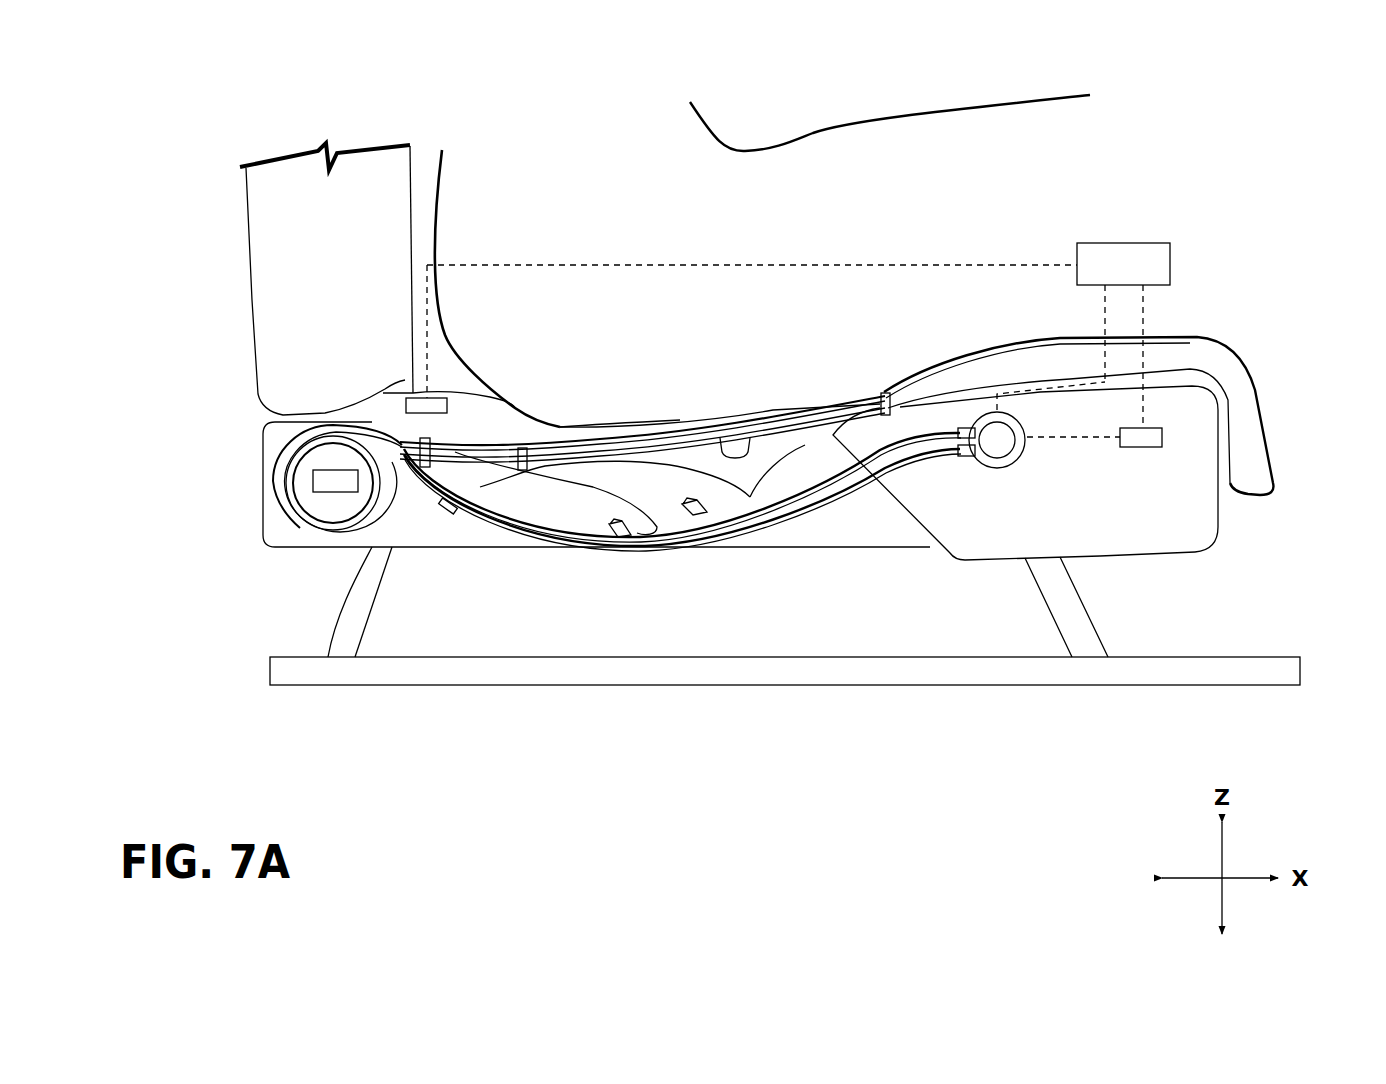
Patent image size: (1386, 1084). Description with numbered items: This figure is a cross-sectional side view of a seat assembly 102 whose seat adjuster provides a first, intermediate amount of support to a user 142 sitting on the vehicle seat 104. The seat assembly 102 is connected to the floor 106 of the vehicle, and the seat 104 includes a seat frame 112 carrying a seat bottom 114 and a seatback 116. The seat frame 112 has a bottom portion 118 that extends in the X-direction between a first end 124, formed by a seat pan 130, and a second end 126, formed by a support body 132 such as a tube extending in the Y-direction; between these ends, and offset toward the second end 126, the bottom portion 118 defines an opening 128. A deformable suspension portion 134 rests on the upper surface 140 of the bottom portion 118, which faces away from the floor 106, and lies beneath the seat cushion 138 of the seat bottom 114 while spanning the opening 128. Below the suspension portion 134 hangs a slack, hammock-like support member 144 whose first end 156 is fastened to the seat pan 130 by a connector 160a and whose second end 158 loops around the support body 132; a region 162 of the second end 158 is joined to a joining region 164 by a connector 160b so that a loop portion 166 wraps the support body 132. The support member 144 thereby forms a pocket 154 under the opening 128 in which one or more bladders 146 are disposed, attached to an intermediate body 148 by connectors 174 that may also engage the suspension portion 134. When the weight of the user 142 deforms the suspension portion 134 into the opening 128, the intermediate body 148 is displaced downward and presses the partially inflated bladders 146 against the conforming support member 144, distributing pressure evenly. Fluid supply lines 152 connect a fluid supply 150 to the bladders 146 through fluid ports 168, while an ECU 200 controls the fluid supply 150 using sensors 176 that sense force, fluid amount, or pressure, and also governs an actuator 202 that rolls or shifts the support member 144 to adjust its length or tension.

The seat assembly 102 is at (1100, 166).
The seat 104 is at (402, 124).
The floor 106 is at (278, 660).
The seat frame 112 is at (1097, 610).
The seat bottom 114 is at (262, 440).
The seatback 116 is at (250, 212).
The bottom portion 118 is at (1092, 563).
The first end 124 is at (1226, 514).
The second end 126 is at (300, 555).
The opening 128 is at (907, 452).
The seat pan 130 is at (1187, 553).
The support body 132 is at (313, 481).
The suspension portion 134 is at (582, 425).
The seat cushion 138 is at (1255, 469).
The upper surface 140 is at (1178, 376).
The user 142 is at (622, 311).
The support member 144 is at (754, 461).
The bladders 146 is at (482, 487).
The intermediate body 148 is at (750, 437).
The fluid supply 150 is at (1000, 471).
The fluid supply lines 152 is at (942, 457).
The pocket 154 is at (835, 452).
The first end 156 is at (868, 389).
The second end 158 is at (416, 509).
The connector 160a is at (892, 395).
The connector 160b is at (451, 513).
The region 162 is at (398, 493).
The joining region 164 is at (406, 404).
The loop portion 166 is at (328, 657).
The fluid ports 168 is at (687, 506).
The connectors 174 is at (518, 449).
The sensors 176 is at (420, 442).
The ECU 200 is at (1140, 243).
The actuator 202 is at (284, 474).